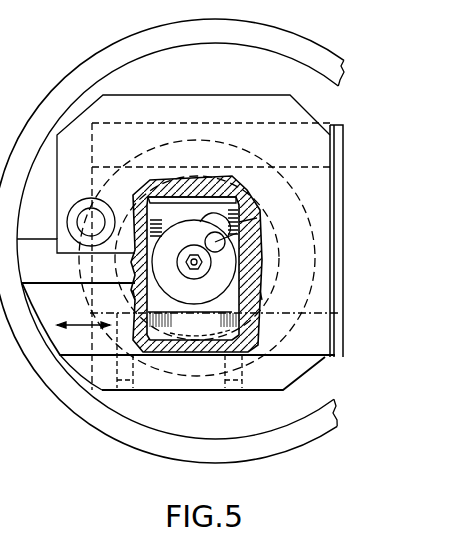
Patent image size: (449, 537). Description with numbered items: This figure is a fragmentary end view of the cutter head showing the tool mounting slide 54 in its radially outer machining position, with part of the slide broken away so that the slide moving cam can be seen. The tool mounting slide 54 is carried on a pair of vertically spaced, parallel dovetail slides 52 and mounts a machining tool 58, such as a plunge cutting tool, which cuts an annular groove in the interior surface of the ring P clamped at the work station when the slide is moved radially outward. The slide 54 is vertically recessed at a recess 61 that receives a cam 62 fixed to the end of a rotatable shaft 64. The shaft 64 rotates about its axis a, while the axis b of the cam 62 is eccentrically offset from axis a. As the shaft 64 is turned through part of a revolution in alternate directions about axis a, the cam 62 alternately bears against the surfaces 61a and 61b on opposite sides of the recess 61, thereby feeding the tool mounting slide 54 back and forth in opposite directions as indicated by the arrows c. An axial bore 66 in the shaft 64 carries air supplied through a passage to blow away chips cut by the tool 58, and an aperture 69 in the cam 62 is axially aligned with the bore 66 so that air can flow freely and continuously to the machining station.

The ring P is at (107, 45).
The tool mounting slide 54 is at (247, 95).
The dovetail slides 52 is at (335, 132).
The machining tool 58 is at (38, 240).
The axial bore 66 is at (227, 195).
The vertical recess 61 is at (204, 264).
The surface 61a is at (133, 298).
The surface 61b is at (232, 297).
The rotatable shaft 64 is at (157, 213).
The cam 62 is at (193, 302).
The aperture 69 is at (208, 232).
The axis a is at (257, 218).
The axis b is at (200, 265).
The arrows c is at (82, 327).